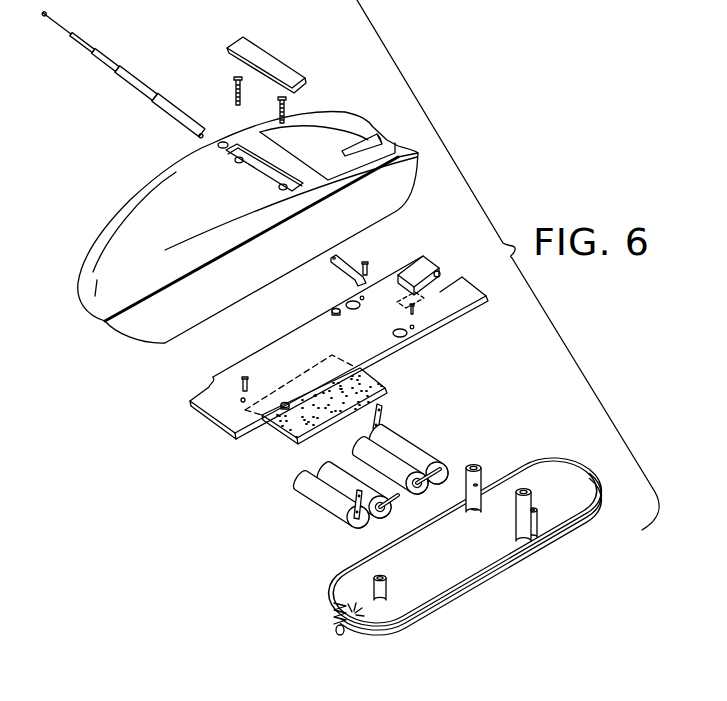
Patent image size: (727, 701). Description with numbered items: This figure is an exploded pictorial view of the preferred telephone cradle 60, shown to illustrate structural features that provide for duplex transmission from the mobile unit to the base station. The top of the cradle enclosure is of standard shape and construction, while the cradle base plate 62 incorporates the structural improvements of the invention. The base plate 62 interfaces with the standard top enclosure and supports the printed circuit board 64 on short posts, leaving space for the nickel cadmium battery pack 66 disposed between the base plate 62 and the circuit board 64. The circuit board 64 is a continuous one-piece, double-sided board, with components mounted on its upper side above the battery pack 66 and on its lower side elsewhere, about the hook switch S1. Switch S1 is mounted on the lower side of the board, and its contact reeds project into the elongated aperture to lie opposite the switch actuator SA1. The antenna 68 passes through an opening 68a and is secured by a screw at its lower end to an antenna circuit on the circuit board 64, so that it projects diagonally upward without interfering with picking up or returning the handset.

The telephone cradle 60 is at (246, 190).
The cradle base plate 62 is at (350, 560).
The printed circuit board 64 is at (339, 340).
The nickel cadmium battery pack 66 is at (297, 482).
The antenna 68 is at (107, 54).
The opening 68a is at (221, 142).
The switch actuator SA1 is at (373, 133).
The hook switch S1 is at (440, 273).